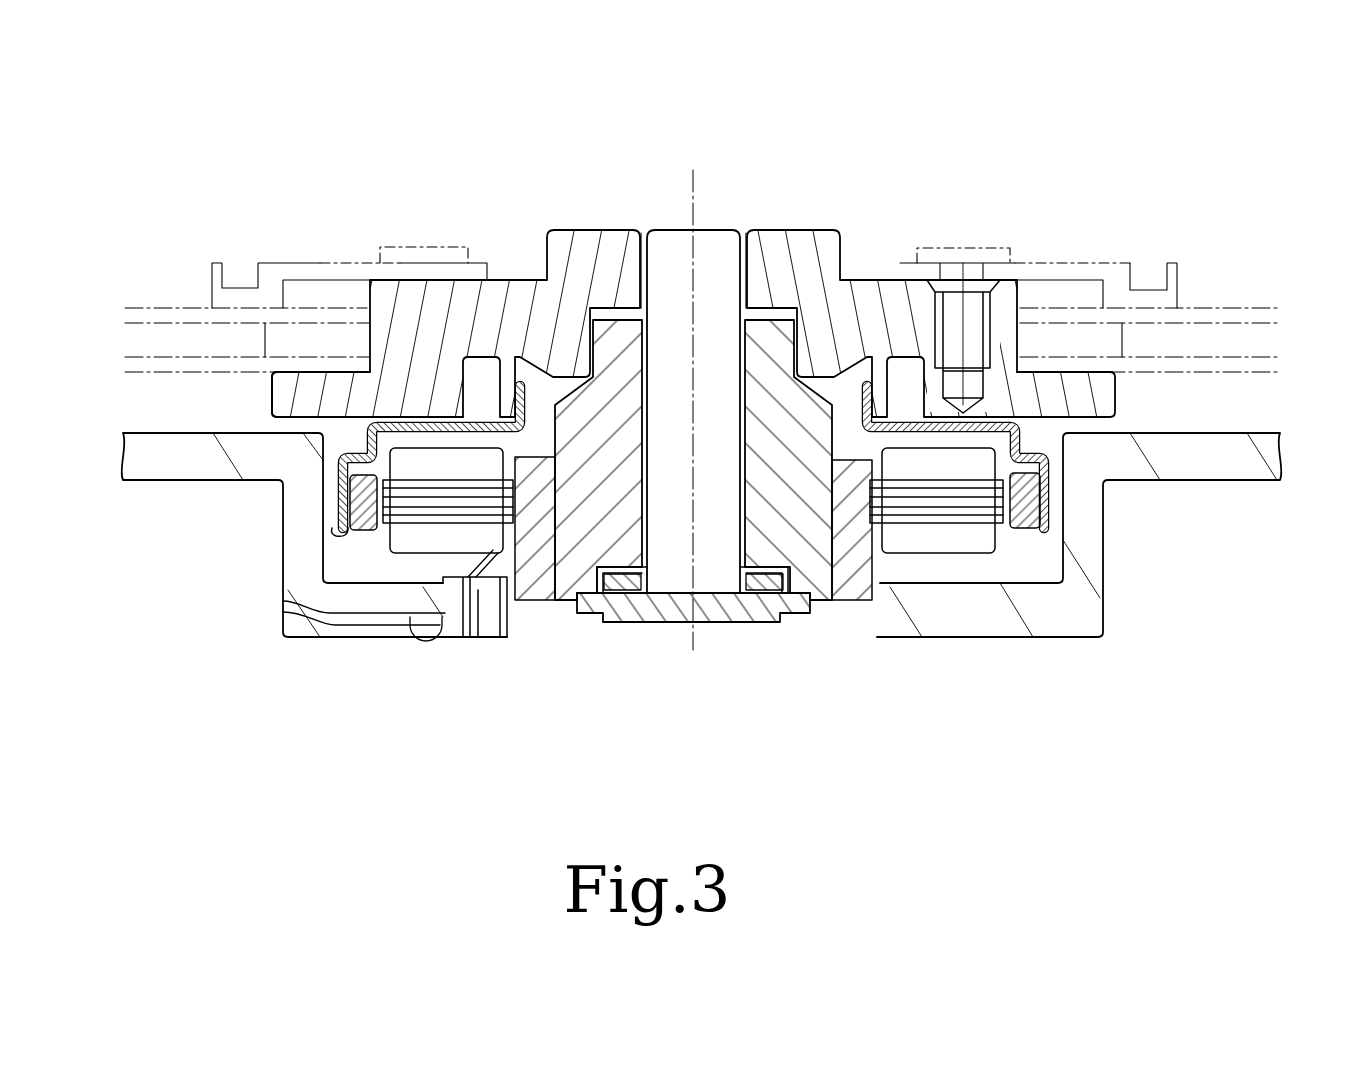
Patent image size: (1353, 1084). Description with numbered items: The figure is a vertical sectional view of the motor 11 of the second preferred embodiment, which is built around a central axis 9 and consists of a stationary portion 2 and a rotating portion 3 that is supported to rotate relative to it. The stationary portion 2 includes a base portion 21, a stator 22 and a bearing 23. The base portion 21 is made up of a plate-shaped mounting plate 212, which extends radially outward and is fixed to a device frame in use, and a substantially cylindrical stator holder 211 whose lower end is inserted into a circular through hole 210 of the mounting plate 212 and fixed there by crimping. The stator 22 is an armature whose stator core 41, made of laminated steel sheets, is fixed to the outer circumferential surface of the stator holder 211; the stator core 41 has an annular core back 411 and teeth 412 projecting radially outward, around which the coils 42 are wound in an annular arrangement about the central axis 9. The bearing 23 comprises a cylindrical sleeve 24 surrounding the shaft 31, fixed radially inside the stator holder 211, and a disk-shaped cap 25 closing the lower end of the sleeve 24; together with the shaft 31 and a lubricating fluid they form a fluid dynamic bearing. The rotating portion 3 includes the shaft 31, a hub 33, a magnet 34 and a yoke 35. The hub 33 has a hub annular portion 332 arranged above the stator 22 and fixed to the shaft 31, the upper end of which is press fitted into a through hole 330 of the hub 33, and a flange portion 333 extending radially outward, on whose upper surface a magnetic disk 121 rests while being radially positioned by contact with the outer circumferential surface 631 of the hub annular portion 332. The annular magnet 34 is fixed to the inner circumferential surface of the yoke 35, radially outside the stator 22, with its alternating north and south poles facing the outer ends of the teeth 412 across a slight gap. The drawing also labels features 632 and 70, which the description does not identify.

The motor 11 is at (945, 170).
The central axis 9 is at (693, 200).
The magnetic disk 121 is at (1192, 318).
The stationary portion 2 is at (453, 650).
The through hole 210 is at (522, 624).
The rotating portion 3 is at (847, 200).
The hub 33 is at (462, 138).
The hub annular portion 332 is at (480, 313).
The flange portion 333 is at (302, 392).
The outer circumferential surface 631 is at (1018, 328).
The screw seat portion 632 is at (1070, 372).
The through hole 330 is at (718, 318).
The shaft 31 is at (705, 292).
The base portion 21 is at (858, 712).
The stator holder 211 is at (780, 527).
The mounting plate 212 is at (897, 617).
The bearing 23 is at (715, 712).
The sleeve 24 is at (743, 607).
The cap 25 is at (667, 613).
The stator 22 is at (930, 755).
The stator core 41 is at (895, 712).
The core back 411 is at (873, 513).
The teeth 412 is at (917, 507).
The coils 42 is at (977, 540).
The yoke sheet 70 is at (526, 357).
The magnet 34 is at (1023, 510).
The yoke 35 is at (330, 533).